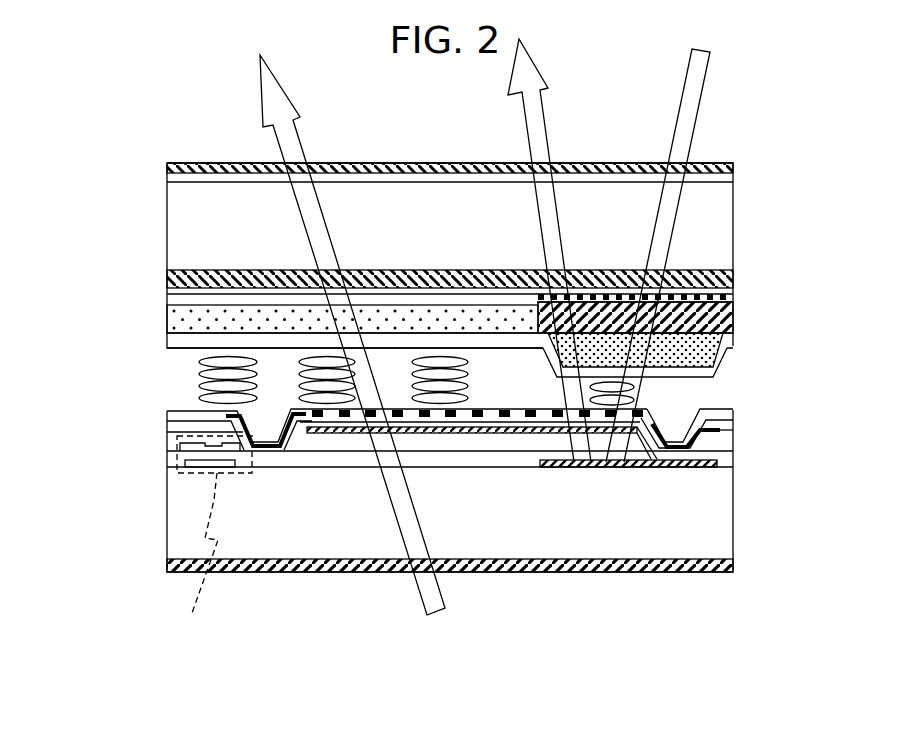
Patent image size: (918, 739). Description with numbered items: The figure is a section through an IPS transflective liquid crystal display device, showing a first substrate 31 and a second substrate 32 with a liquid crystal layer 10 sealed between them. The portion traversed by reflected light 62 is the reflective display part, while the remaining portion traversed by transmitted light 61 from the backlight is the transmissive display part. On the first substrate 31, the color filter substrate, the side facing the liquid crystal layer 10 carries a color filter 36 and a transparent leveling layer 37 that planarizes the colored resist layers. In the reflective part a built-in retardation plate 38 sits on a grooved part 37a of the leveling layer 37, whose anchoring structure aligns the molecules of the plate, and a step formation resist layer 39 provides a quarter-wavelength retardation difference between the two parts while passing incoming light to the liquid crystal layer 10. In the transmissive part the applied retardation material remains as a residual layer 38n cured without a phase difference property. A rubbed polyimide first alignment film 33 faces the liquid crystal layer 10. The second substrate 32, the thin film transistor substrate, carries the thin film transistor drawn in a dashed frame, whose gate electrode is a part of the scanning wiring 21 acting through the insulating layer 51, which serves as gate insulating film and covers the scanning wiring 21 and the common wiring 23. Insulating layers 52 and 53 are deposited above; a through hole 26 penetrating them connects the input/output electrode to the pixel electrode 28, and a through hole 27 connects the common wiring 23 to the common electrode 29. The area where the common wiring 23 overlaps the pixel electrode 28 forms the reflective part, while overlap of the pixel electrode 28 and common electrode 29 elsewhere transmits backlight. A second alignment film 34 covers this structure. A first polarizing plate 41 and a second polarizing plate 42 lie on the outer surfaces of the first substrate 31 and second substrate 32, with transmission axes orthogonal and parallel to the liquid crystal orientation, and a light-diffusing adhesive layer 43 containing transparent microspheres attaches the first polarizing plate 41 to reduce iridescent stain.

The liquid crystal layer 10 is at (687, 397).
The scanning wiring 21 is at (198, 480).
The common wiring 23 is at (640, 470).
The through hole 26 is at (262, 412).
The through hole 27 is at (683, 432).
The pixel electrode 28 is at (412, 420).
The common electrode 29 is at (485, 435).
The first substrate 31 is at (178, 222).
The second substrate 32 is at (183, 517).
The first alignment film 33 is at (172, 346).
The second alignment film 34 is at (176, 412).
The color filter 36 is at (172, 280).
The leveling layer 37 is at (172, 296).
The part of the leveling layer 37a is at (690, 297).
The built-in retardation plate 38 is at (735, 305).
The residual layer 38n is at (172, 318).
The step formation resist layer 39 is at (692, 351).
The first polarizing plate 41 is at (187, 165).
The second polarizing plate 42 is at (170, 565).
The light-diffusing adhesive layer 43 is at (172, 177).
The insulating layer 51 is at (177, 462).
The insulating layer 52 is at (177, 444).
The insulating layer 53 is at (177, 428).
The transmitted light 61 is at (275, 137).
The reflected light 62 is at (533, 132).